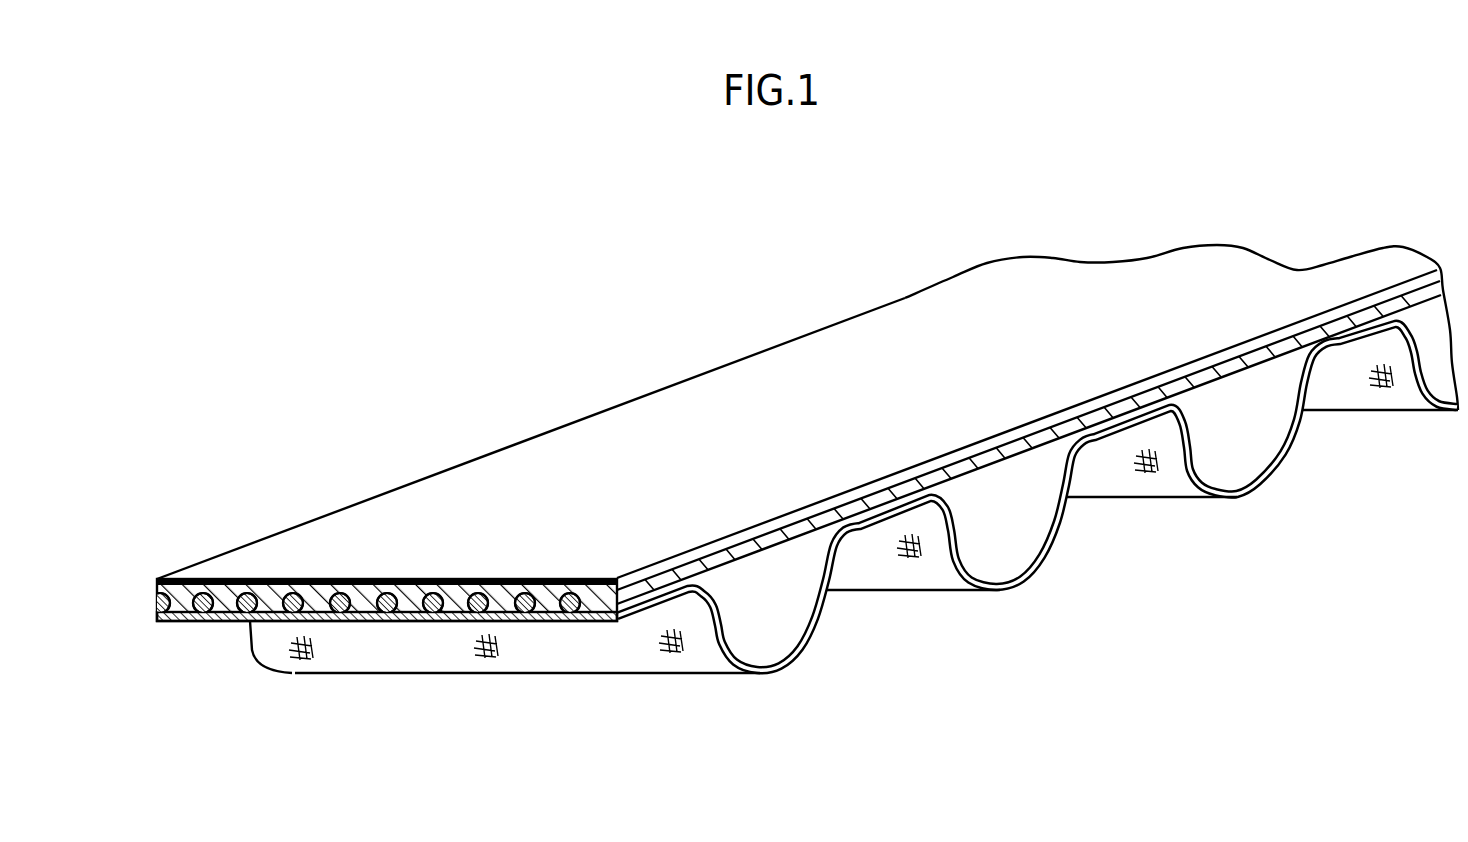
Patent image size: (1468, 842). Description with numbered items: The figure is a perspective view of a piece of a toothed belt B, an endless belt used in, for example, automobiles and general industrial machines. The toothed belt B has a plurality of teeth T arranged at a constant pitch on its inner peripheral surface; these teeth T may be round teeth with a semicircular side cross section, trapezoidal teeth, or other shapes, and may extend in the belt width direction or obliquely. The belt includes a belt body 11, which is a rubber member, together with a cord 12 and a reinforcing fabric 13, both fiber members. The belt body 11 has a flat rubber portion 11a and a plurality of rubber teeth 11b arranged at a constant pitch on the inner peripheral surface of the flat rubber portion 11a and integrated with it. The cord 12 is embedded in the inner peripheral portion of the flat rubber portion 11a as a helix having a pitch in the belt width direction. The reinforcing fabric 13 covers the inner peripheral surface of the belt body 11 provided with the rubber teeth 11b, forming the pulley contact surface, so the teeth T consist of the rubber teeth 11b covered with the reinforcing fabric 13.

The toothed belt B is at (718, 248).
The belt body 11 is at (149, 596).
The flat rubber portion 11a is at (465, 594).
The rubber teeth 11b is at (760, 628).
The cord 12 is at (340, 597).
The reinforcing fabric 13 is at (392, 625).
The teeth T is at (647, 686).